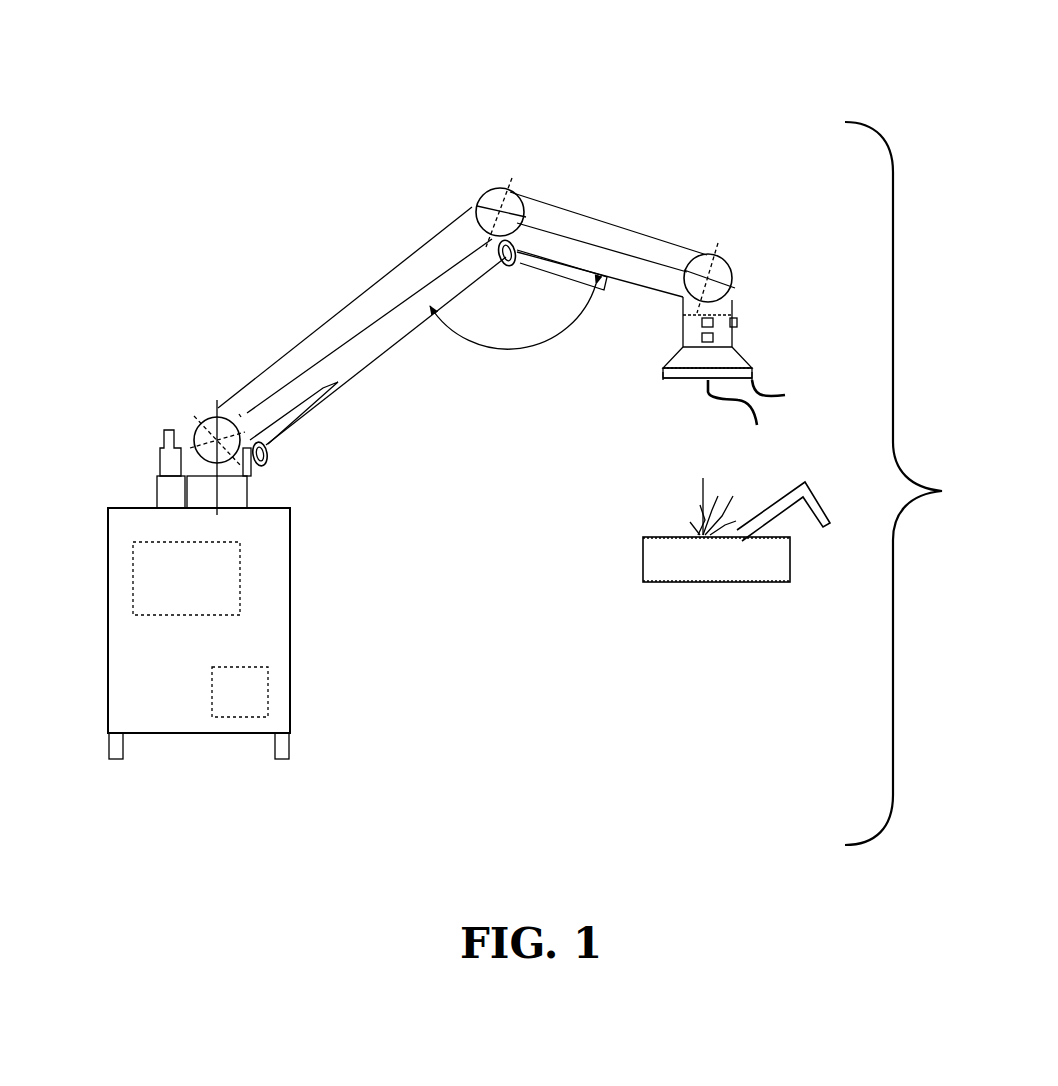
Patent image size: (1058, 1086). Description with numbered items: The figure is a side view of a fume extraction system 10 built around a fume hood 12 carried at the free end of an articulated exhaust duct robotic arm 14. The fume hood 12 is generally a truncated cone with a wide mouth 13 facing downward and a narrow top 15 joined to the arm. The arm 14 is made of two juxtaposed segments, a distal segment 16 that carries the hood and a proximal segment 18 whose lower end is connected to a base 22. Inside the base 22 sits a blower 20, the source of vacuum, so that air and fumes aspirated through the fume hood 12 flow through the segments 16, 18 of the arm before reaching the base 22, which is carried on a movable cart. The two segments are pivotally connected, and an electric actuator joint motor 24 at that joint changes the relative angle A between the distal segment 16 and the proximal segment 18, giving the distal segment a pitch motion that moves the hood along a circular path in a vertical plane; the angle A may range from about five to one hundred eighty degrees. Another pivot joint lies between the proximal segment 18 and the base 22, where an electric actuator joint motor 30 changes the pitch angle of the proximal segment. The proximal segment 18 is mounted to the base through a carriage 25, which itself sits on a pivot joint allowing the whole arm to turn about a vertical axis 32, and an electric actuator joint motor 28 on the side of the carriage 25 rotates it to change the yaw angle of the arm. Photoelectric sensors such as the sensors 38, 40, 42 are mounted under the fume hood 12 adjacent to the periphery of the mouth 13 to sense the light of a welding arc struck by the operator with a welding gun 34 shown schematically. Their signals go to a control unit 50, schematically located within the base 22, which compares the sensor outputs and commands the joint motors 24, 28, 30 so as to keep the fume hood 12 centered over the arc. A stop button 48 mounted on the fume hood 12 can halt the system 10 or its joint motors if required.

The fume extraction system 10 is at (642, 88).
The fume hood 12 is at (744, 358).
The wide mouth 13 is at (660, 372).
The articulated exhaust duct robotic arm 14 is at (468, 203).
The narrow top 15 is at (735, 300).
The distal segment 16 is at (607, 217).
The proximal segment 18 is at (323, 320).
The blower 20 is at (212, 586).
The base 22 is at (293, 577).
The electric actuator joint motor 24 is at (512, 268).
The carriage 25 is at (162, 417).
The electric actuator joint motor 28 is at (160, 462).
The electric actuator joint motor 30 is at (268, 456).
The vertical axis 32 is at (232, 480).
The welding gun 34 is at (777, 520).
The photoelectric sensor 38 is at (773, 417).
The photoelectric sensor 40 is at (783, 389).
The photoelectric sensor 42 is at (663, 377).
The stop button 48 is at (716, 337).
The control unit 50 is at (252, 688).
The relative angle A is at (513, 316).